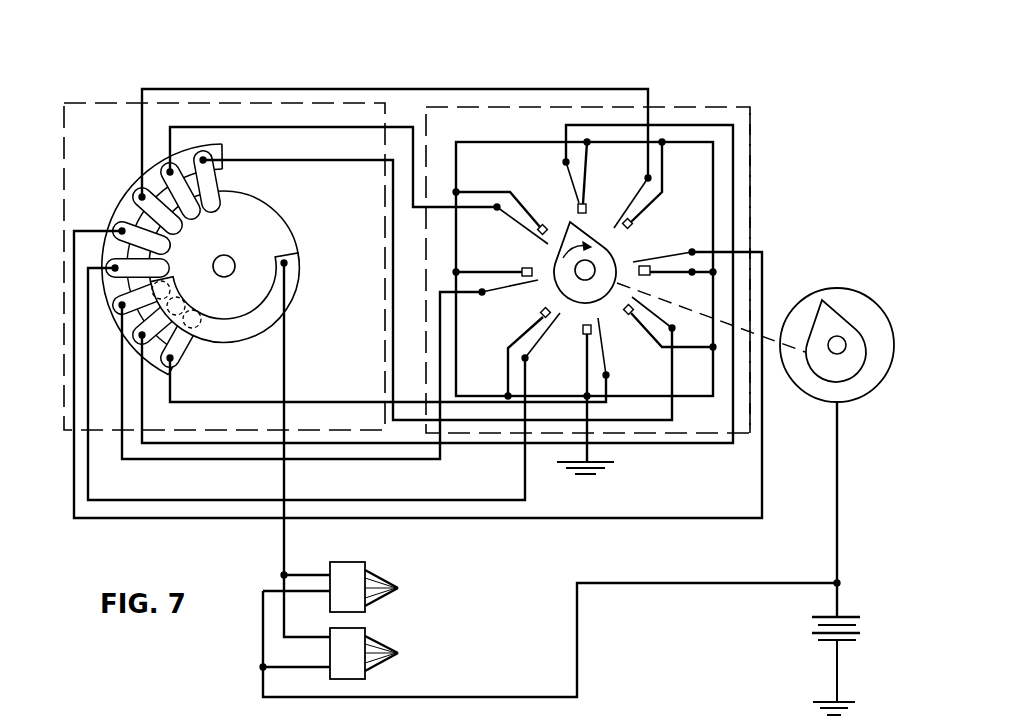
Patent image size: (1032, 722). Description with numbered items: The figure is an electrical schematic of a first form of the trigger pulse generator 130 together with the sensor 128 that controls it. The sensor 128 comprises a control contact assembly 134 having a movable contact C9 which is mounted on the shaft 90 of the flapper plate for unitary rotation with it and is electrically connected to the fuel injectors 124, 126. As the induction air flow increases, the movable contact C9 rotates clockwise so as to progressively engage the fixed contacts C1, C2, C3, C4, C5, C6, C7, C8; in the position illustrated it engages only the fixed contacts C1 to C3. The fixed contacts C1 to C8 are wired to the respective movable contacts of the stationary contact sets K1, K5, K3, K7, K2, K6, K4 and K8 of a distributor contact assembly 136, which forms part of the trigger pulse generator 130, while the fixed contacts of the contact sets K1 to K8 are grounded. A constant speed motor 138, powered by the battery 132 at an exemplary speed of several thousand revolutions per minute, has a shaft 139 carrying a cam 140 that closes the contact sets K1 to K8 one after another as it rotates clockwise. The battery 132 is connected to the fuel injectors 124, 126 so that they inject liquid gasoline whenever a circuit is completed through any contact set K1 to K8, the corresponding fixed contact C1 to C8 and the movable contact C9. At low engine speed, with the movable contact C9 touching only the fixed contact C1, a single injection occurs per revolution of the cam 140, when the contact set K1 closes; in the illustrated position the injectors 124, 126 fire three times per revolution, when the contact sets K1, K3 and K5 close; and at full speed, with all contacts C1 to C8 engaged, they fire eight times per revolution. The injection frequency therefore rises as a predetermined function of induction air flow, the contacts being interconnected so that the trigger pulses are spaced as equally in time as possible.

The sensor 128 is at (101, 98).
The trigger pulse generator 130 is at (697, 98).
The distributor contact assembly 136 is at (758, 167).
The control contact assembly 134 is at (107, 357).
The shaft 90 is at (227, 256).
The fixed contact C1 is at (185, 355).
The fixed contact C2 is at (149, 345).
The fixed contact C3 is at (123, 312).
The fixed contact C4 is at (115, 264).
The fixed contact C5 is at (125, 227).
The fixed contact C6 is at (138, 195).
The fixed contact C7 is at (170, 168).
The fixed contact C8 is at (218, 171).
The movable contact C9 is at (252, 338).
The contact set K1 is at (583, 358).
The contact set K2 is at (534, 329).
The contact set K3 is at (510, 268).
The contact set K4 is at (539, 222).
The contact set K5 is at (590, 191).
The contact set K6 is at (638, 219).
The contact set K7 is at (655, 275).
The contact set K8 is at (647, 329).
The cam 140 is at (612, 254).
The constant speed motor 138 is at (853, 292).
The shaft 139 is at (850, 345).
The battery 132 is at (840, 616).
The fuel injector 124 is at (360, 562).
The fuel injector 126 is at (368, 674).